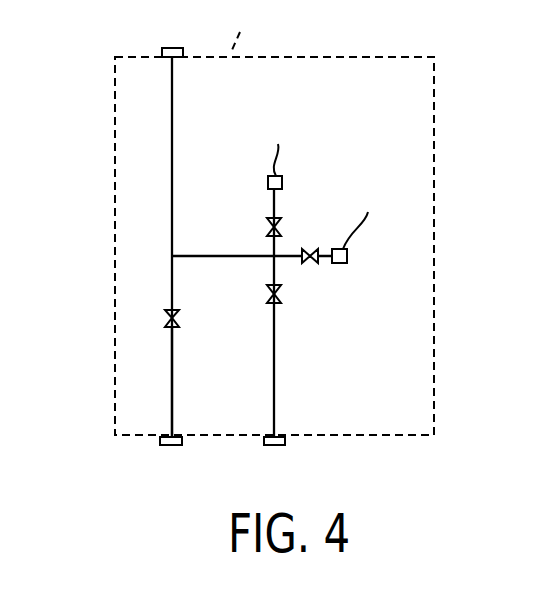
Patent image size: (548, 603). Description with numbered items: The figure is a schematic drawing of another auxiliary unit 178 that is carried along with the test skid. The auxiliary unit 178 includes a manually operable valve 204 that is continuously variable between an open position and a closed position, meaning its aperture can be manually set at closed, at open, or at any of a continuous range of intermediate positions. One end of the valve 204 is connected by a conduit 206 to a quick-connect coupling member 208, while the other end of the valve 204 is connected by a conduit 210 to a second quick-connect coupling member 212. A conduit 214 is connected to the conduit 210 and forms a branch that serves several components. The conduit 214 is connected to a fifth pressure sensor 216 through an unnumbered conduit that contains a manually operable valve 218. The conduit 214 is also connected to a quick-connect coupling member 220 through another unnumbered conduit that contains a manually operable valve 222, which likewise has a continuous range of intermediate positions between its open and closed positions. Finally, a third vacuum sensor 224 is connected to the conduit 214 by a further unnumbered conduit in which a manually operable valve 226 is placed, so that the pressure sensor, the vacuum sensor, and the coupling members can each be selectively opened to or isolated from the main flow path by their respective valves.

The auxiliary unit 178 is at (113, 243).
The manually operable valve 204 is at (179, 320).
The conduit 206 is at (173, 385).
The quick-connect coupling member 208 is at (172, 446).
The conduit 210 is at (172, 189).
The quick-connect coupling member 212 is at (163, 47).
The conduit 214 is at (220, 257).
The fifth pressure sensor 216 is at (268, 181).
The manually operable valve 218 is at (267, 230).
The quick-connect coupling member 220 is at (275, 446).
The manually operable valve 222 is at (280, 298).
The third vacuum sensor 224 is at (347, 256).
The manually operable valve 226 is at (311, 263).